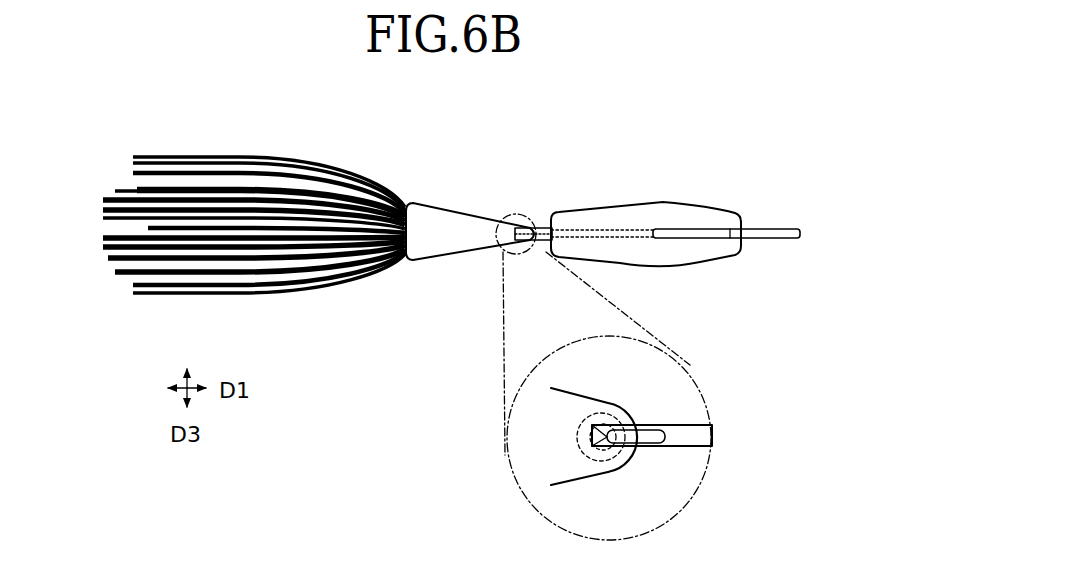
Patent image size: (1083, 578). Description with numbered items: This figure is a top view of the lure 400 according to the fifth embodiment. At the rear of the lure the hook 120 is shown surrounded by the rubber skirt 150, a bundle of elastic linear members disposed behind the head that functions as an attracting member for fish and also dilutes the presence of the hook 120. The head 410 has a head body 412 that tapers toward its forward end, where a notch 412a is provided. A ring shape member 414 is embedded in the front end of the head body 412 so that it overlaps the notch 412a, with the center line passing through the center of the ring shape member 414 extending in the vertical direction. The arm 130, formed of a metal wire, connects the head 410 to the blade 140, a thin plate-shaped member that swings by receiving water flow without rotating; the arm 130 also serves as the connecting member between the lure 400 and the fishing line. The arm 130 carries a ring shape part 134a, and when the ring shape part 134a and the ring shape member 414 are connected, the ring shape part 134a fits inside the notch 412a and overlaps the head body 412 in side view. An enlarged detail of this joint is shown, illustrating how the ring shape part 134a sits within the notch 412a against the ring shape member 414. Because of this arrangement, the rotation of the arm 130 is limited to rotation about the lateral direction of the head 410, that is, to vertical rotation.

The lure 400 is at (636, 96).
The hook 120 is at (184, 230).
The rubber skirt 150 is at (296, 304).
The head 410 is at (428, 195).
The head body 412 is at (460, 248).
The notch 412a is at (591, 440).
The ring shape member 414 is at (531, 226).
The ring shape part 134a is at (540, 228).
The arm 130 is at (722, 276).
The blade 140 is at (685, 208).